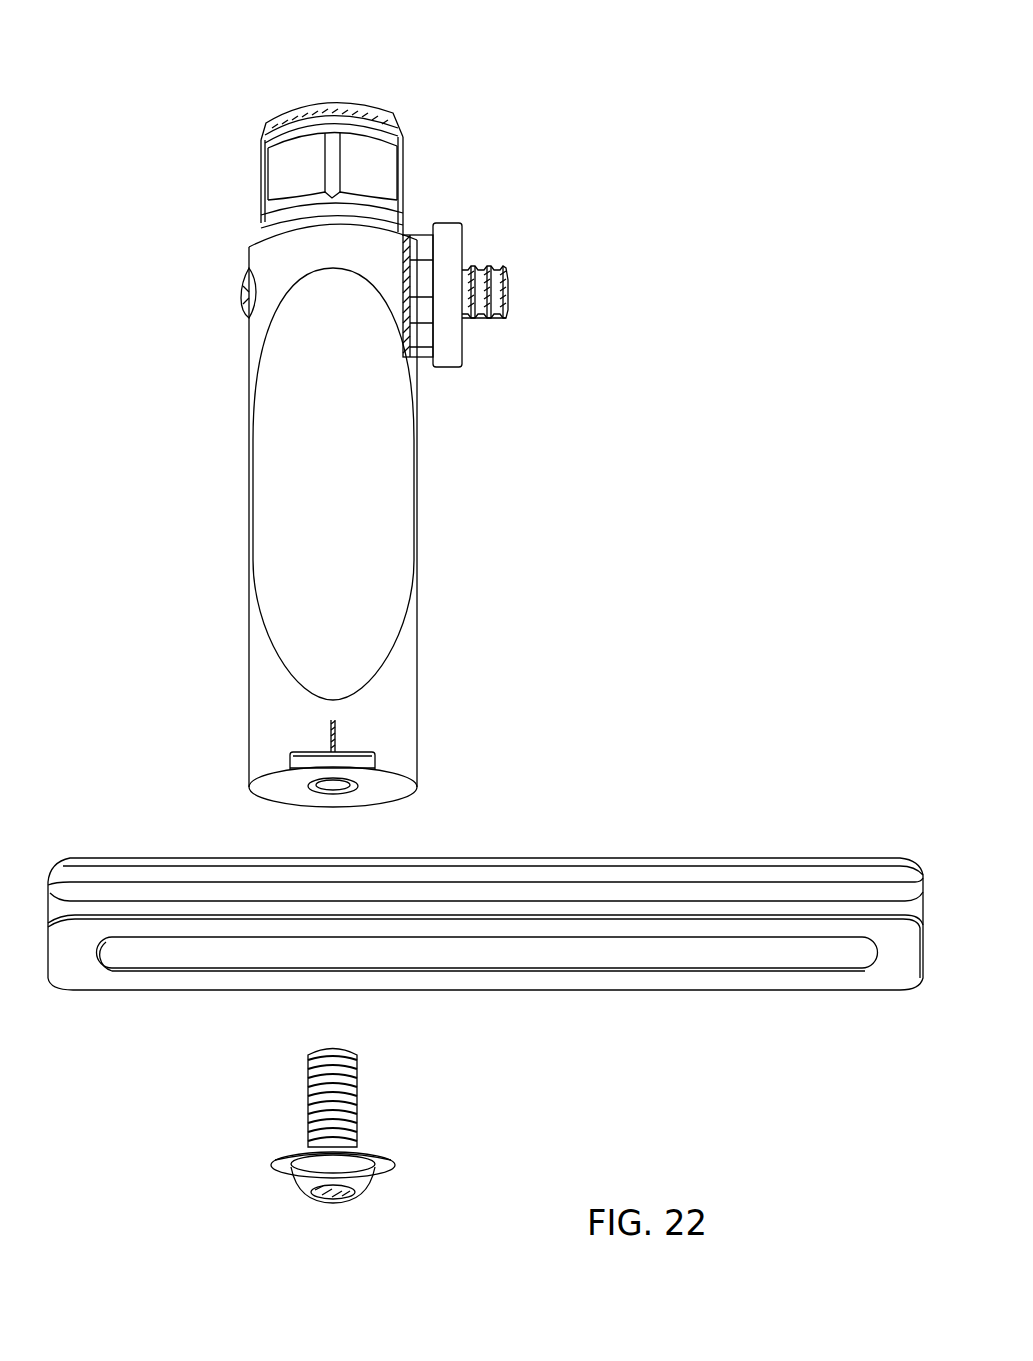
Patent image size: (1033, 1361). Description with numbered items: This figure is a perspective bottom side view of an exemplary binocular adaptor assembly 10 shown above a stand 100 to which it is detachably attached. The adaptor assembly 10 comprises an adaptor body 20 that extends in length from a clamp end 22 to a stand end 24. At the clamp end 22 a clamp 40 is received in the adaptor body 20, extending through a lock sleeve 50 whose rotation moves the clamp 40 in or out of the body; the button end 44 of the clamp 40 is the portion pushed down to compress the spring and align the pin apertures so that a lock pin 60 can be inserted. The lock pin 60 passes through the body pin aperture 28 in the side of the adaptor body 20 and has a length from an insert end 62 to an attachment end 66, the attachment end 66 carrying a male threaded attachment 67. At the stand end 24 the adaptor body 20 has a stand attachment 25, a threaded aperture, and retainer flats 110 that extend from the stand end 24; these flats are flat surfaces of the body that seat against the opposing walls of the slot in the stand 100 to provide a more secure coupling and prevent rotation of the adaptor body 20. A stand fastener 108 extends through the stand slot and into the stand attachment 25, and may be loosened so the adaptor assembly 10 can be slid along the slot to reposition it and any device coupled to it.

The binocular adaptor assembly 10 is at (244, 116).
The adaptor body 20 is at (378, 542).
The clamp end 22 is at (393, 137).
The stand end 24 is at (268, 788).
The stand attachment 25 is at (346, 793).
The body pin aperture 28 is at (246, 288).
The clamp 40 is at (385, 190).
The button end 44 is at (359, 107).
The lock sleeve 50 is at (385, 150).
The lock pin 60 is at (438, 253).
The insert end 62 is at (246, 298).
The attachment end 66 is at (510, 291).
The threaded attachment 67 is at (500, 320).
The stand 100 is at (737, 878).
The stand fastener 108 is at (355, 1113).
The retainer flat 110 is at (355, 760).